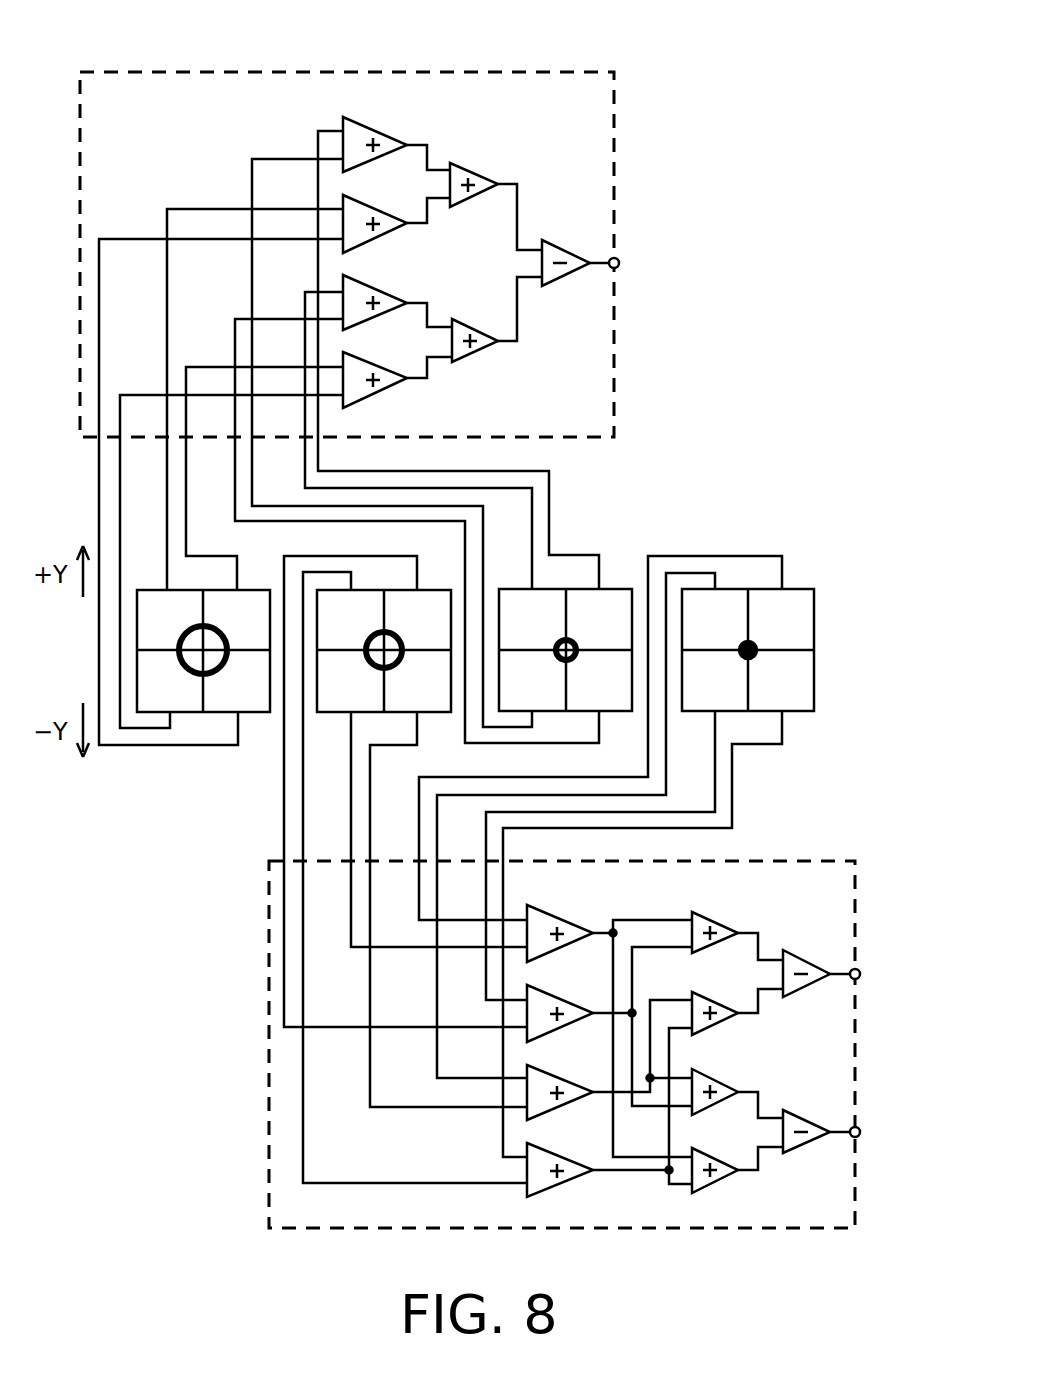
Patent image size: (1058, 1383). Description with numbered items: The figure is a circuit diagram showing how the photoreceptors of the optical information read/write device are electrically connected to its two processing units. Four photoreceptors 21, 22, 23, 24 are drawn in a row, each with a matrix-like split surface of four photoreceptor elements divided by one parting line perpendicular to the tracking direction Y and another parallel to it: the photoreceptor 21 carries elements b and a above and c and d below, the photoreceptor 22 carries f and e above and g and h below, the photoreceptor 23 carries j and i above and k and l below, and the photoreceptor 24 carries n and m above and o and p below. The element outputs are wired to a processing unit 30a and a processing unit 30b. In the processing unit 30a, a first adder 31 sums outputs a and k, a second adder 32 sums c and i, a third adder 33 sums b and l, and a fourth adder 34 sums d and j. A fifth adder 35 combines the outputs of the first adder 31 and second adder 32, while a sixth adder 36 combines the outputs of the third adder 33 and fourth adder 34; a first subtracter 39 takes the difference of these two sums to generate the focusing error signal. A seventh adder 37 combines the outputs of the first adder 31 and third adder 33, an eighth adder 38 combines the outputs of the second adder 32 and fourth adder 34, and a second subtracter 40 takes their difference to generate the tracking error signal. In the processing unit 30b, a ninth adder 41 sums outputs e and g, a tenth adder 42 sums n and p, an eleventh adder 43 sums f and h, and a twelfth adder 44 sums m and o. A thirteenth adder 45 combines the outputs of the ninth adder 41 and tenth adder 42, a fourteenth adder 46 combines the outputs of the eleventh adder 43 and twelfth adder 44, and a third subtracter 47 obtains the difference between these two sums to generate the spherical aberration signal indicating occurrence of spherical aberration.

The photoreceptor 21 is at (698, 712).
The photoreceptor 22 is at (621, 589).
The photoreceptor 23 is at (340, 712).
The photoreceptor 24 is at (146, 589).
The processing unit 30a is at (819, 861).
The processing unit 30b is at (576, 72).
The first adder 31 is at (596, 903).
The second adder 32 is at (596, 984).
The third adder 33 is at (596, 1063).
The fourth adder 34 is at (596, 1141).
The fifth adder 35 is at (748, 903).
The sixth adder 36 is at (748, 984).
The seventh adder 37 is at (748, 1063).
The eighth adder 38 is at (748, 1141).
The first subtracter 39 is at (836, 941).
The second subtracter 40 is at (836, 1099).
The ninth adder 41 is at (410, 112).
The tenth adder 42 is at (410, 192).
The eleventh adder 43 is at (410, 270).
The twelfth adder 44 is at (410, 351).
The thirteenth adder 45 is at (505, 153).
The fourteenth adder 46 is at (505, 309).
The third subtracter 47 is at (592, 228).